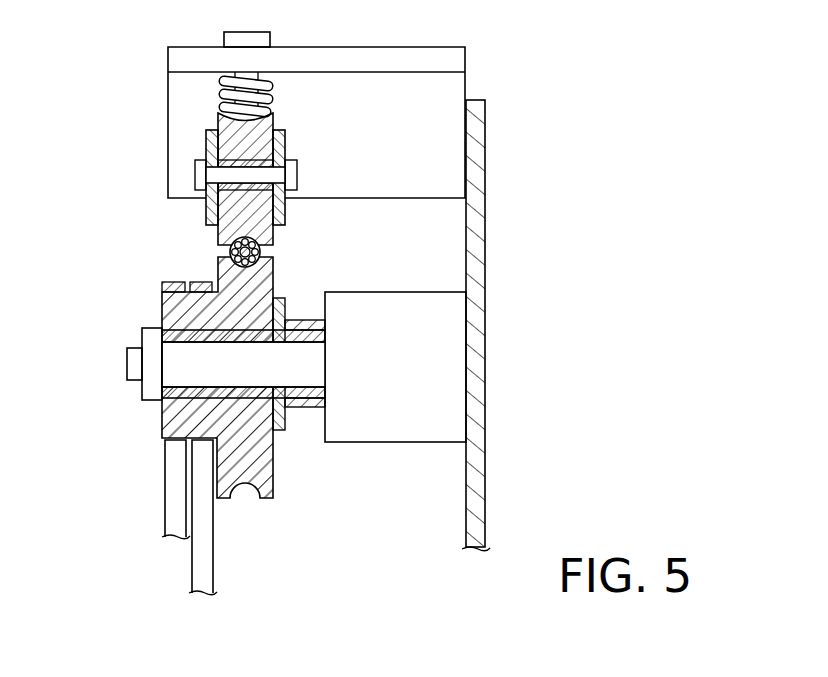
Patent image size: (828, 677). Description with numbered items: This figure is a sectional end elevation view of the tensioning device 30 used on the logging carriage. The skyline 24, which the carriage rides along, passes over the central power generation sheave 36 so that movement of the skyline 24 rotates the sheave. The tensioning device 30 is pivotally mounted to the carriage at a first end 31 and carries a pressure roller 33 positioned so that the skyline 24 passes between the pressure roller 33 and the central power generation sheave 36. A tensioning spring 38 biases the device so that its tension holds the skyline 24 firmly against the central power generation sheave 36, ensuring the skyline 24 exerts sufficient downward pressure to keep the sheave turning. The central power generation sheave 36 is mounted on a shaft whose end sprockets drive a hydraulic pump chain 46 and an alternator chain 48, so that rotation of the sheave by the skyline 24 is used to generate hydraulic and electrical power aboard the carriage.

The tensioning device 30 is at (170, 126).
The first end 31 is at (206, 150).
The pressure roller 33 is at (270, 120).
The tensioning spring 38 is at (222, 94).
The skyline 24 is at (231, 251).
The central power generation sheave 36 is at (273, 452).
The hydraulic pump chain 46 is at (165, 482).
The alternator chain 48 is at (192, 575).